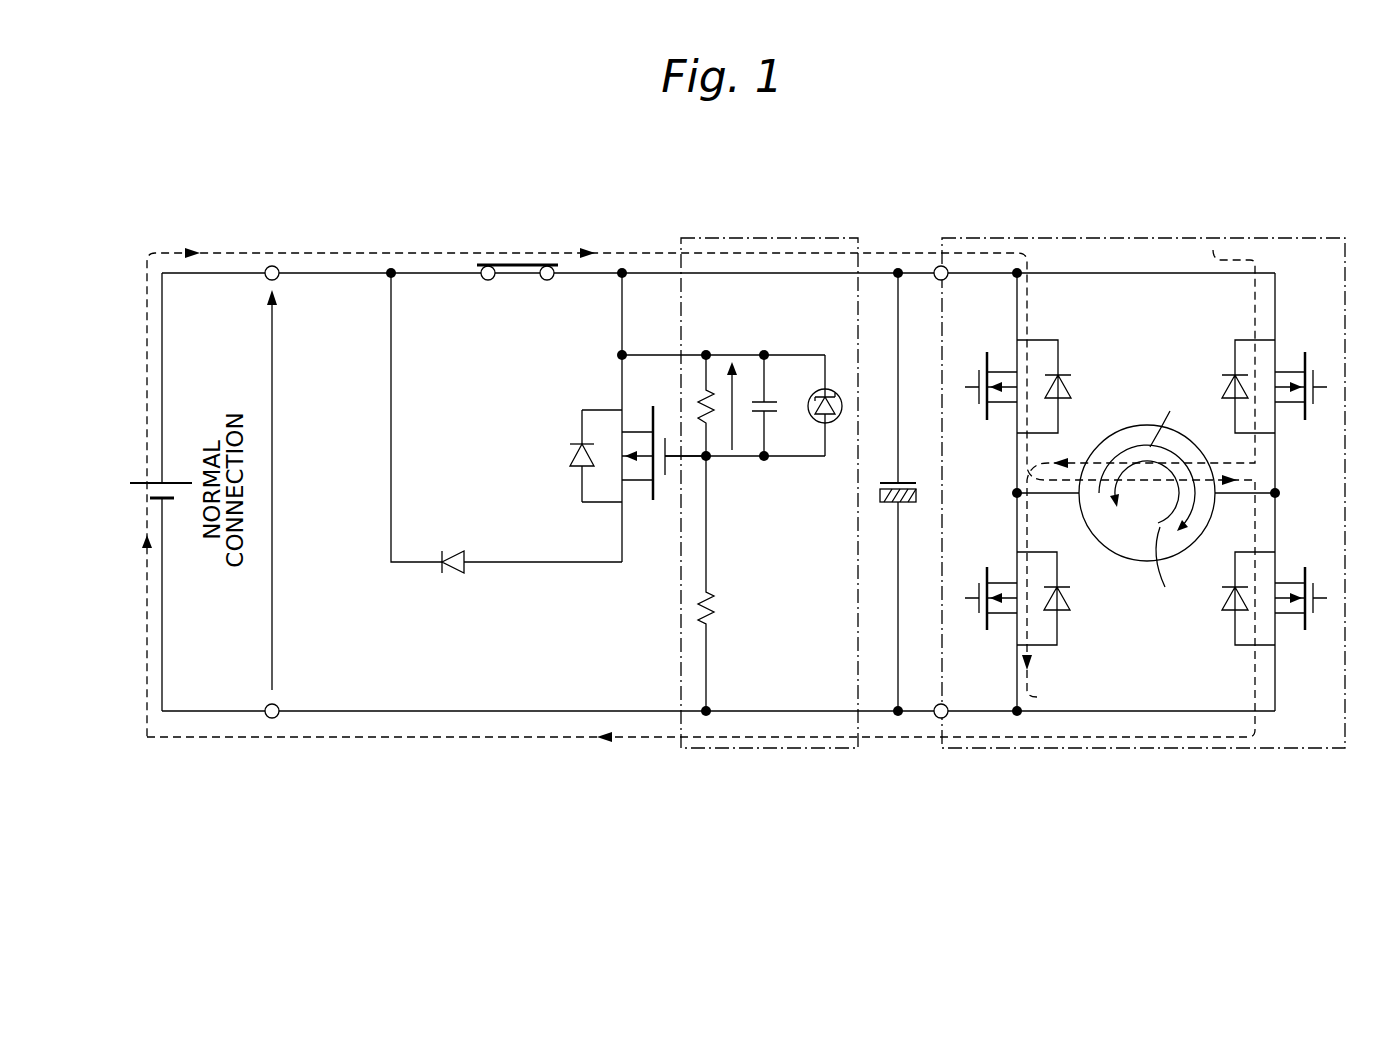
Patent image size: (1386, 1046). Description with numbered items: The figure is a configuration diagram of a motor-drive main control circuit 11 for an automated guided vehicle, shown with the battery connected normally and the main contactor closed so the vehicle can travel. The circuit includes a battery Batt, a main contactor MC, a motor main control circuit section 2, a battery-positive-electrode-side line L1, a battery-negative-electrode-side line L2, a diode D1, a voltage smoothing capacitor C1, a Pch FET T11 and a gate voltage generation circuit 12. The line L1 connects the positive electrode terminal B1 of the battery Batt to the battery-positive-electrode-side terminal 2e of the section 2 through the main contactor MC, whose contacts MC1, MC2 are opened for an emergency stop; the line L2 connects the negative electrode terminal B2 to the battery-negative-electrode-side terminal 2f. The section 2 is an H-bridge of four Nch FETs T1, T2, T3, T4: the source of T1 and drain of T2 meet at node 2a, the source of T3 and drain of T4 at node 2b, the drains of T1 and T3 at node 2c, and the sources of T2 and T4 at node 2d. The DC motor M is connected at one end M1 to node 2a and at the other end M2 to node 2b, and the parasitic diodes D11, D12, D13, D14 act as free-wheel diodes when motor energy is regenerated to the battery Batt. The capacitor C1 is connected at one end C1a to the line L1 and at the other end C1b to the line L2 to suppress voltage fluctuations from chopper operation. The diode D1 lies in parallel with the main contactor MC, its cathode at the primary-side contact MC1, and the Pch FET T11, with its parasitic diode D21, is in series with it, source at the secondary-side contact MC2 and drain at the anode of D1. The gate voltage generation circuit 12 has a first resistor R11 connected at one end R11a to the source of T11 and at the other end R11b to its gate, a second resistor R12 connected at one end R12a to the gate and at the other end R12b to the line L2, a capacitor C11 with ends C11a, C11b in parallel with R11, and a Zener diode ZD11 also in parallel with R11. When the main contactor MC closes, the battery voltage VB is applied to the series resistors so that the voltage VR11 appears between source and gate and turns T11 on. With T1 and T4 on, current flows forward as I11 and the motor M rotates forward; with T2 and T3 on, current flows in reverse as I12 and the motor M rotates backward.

The motor-drive main control circuit 11 is at (1140, 190).
The gate voltage generation circuit 12 is at (750, 238).
The motor main control circuit section 2 is at (1143, 238).
The node 2a is at (1012, 495).
The node 2b is at (1280, 497).
The node 2c is at (1020, 268).
The node 2d is at (1020, 718).
The battery-positive-electrode-side terminal 2e is at (935, 266).
The battery-negative-electrode-side terminal 2f is at (940, 719).
The battery Batt is at (150, 483).
The positive electrode terminal B1 is at (272, 265).
The negative electrode terminal B2 is at (272, 719).
The battery-positive-electrode-side line L1 is at (347, 268).
The battery-negative-electrode-side line L2 is at (347, 716).
The main contactor MC is at (517, 263).
The primary-side contact MC1 is at (481, 268).
The secondary-side contact MC2 is at (554, 268).
The battery voltage VB is at (288, 490).
The diode D1 is at (452, 572).
The parasitic diode D21 is at (568, 454).
The Pch FET T11 is at (653, 502).
The first resistor R11 is at (700, 405).
The one end of first resistor R11a is at (708, 372).
The other end of first resistor R11b is at (710, 460).
The second resistor R12 is at (703, 600).
The one end of second resistor R12a is at (708, 470).
The other end of second resistor R12b is at (710, 716).
The voltage of first resistor VR11 is at (738, 388).
The capacitor C11 is at (770, 462).
The one end of capacitor C11a is at (768, 395).
The other end of capacitor C11b is at (768, 466).
The Zener diode ZD11 is at (838, 400).
The voltage smoothing capacitor C1 is at (896, 483).
The one end of voltage smoothing capacitor C1a is at (888, 280).
The other end of voltage smoothing capacitor C1b is at (895, 715).
The forward-direction current I11 is at (1005, 238).
The reverse-direction current I12 is at (1238, 238).
The DC motor M is at (1127, 437).
The one end of DC motor M1 is at (1012, 491).
The other end of DC motor M2 is at (1280, 491).
The Nch FET T1 is at (985, 420).
The Nch FET T2 is at (985, 630).
The Nch FET T3 is at (1307, 420).
The Nch FET T4 is at (1307, 630).
The parasitic diode D11 is at (1070, 380).
The parasitic diode D12 is at (1070, 598).
The parasitic diode D13 is at (1228, 382).
The parasitic diode D14 is at (1222, 600).